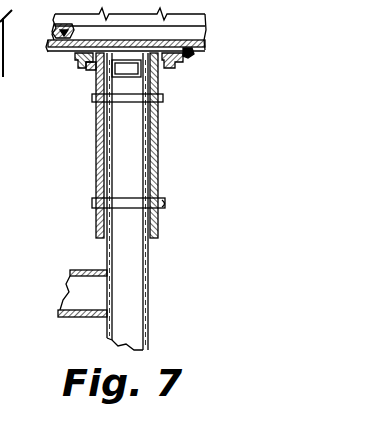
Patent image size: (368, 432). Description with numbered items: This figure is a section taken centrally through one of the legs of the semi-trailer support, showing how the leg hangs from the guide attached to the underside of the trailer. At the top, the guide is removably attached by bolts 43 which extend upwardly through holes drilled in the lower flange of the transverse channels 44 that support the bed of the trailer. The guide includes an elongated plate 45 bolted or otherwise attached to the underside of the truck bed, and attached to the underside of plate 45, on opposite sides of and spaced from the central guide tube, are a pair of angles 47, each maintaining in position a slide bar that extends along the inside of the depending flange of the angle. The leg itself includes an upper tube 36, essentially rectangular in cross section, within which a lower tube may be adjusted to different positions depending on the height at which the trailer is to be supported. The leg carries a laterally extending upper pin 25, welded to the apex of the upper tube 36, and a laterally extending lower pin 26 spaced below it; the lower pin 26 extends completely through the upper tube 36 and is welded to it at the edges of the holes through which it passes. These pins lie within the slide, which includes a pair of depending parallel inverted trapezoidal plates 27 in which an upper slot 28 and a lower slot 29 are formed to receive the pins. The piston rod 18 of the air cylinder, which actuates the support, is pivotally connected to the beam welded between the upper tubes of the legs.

The piston rod 18 is at (98, 270).
The upper pin 25 is at (163, 73).
The lower pin 26 is at (137, 198).
The plates 27 is at (96, 172).
The upper slot 28 is at (164, 100).
The lower slot 29 is at (165, 207).
The upper tube 36 is at (148, 302).
The bolts 43 is at (50, 15).
The transverse channels 44 is at (52, 47).
The elongated plate 45 is at (54, 42).
The angles 47 is at (75, 67).